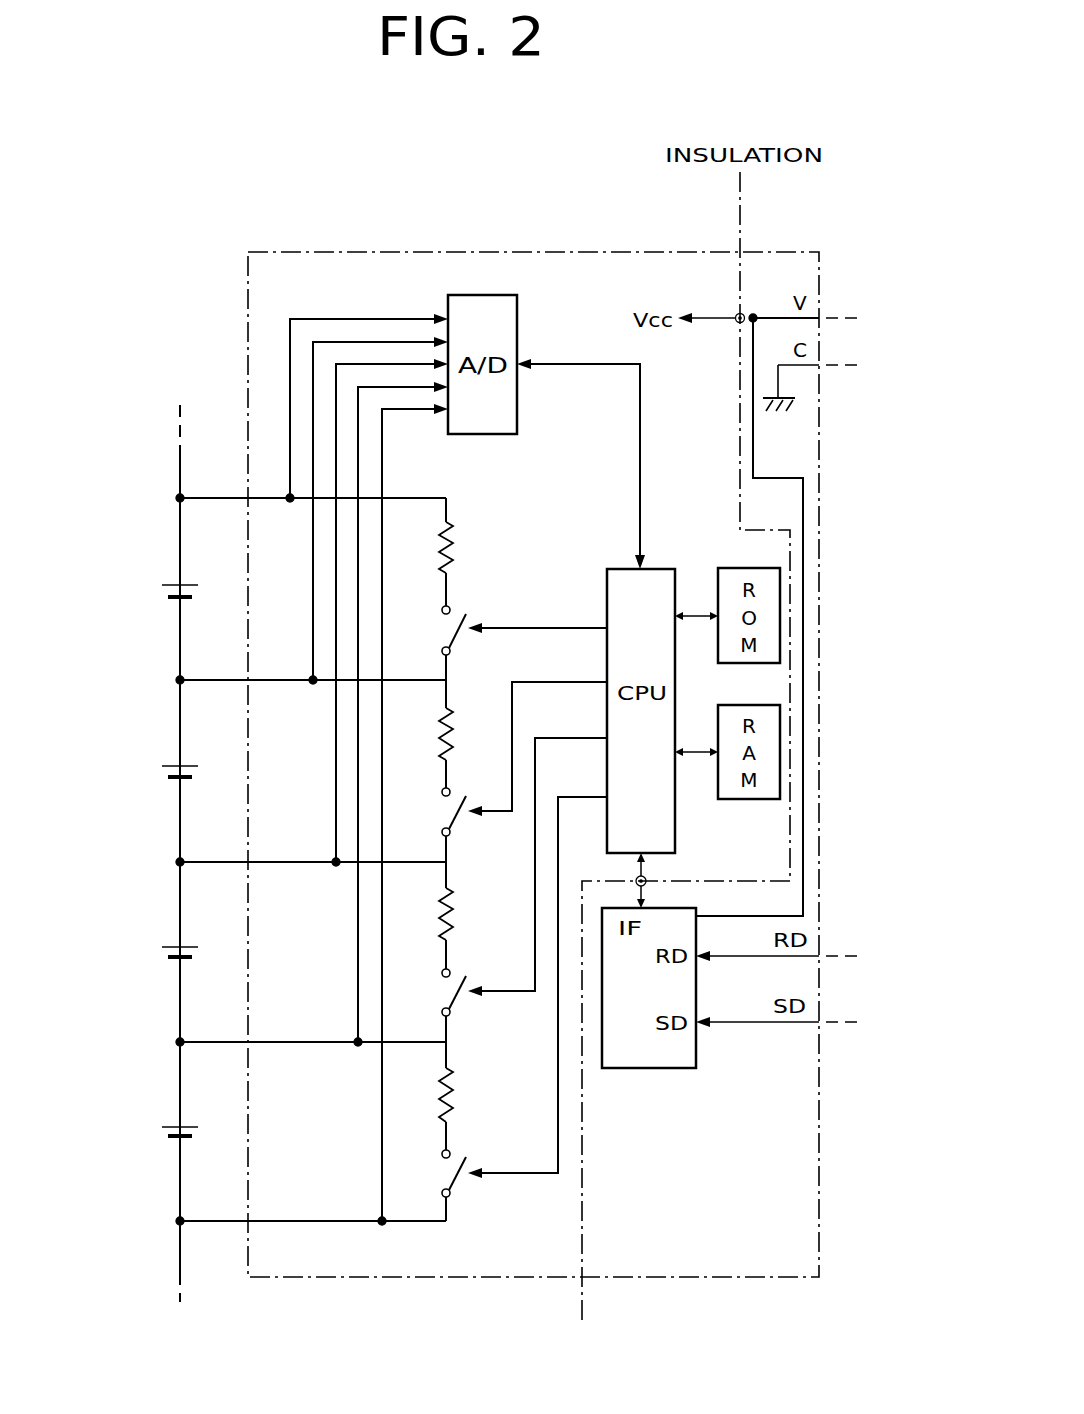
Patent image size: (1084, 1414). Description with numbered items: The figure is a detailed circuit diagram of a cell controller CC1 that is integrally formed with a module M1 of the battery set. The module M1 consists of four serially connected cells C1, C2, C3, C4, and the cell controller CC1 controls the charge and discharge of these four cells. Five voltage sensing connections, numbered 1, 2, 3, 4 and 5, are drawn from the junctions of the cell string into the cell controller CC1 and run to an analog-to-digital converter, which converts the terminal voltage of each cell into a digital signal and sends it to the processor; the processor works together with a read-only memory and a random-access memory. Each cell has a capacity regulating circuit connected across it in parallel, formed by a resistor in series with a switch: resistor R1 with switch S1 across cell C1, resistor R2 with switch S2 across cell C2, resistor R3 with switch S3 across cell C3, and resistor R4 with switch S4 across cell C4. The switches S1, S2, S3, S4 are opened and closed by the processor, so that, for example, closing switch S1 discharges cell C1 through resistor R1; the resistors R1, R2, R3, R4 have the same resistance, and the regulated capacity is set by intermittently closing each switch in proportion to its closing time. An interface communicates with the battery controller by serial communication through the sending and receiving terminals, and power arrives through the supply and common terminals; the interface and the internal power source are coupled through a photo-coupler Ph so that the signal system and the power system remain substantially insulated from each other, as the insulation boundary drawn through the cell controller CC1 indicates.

The cell controller CC1 is at (562, 227).
The module M1 is at (117, 510).
The cell C1 is at (162, 590).
The cell C2 is at (162, 771).
The cell C3 is at (162, 951).
The cell C4 is at (162, 1131).
The cell voltage input node 1 is at (311, 486).
The cell voltage input node 2 is at (311, 668).
The cell voltage input node 3 is at (311, 849).
The cell voltage input node 4 is at (311, 1028).
The cell voltage input node 5 is at (311, 1207).
The resistor R1 is at (463, 547).
The resistor R2 is at (463, 734).
The resistor R3 is at (463, 914).
The resistor R4 is at (463, 1095).
The switch S1 is at (503, 630).
The switch S2 is at (503, 759).
The switch S3 is at (503, 877).
The switch S4 is at (503, 997).
The photo-coupler Ph is at (736, 323).